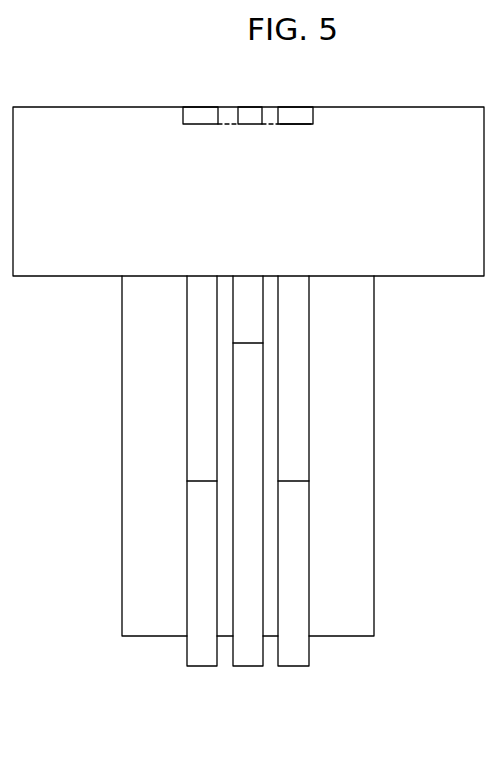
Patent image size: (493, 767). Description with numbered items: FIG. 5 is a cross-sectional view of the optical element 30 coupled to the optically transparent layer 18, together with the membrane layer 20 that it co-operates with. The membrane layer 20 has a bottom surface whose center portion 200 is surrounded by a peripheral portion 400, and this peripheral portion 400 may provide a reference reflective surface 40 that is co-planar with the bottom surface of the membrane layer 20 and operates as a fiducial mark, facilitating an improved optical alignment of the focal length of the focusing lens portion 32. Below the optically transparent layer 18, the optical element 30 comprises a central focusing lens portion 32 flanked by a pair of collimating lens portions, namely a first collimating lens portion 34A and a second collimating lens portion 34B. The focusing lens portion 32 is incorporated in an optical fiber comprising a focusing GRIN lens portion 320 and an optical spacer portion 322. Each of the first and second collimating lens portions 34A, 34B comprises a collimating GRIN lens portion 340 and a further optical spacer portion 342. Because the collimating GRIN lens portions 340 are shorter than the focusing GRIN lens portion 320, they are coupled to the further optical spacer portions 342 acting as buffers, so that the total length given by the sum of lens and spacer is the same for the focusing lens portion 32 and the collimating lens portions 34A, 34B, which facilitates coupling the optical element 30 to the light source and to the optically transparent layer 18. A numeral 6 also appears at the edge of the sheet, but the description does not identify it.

The optically transparent layer 18 is at (441, 276).
The peripheral portion 400 is at (198, 101).
The membrane layer 20 is at (254, 95).
The center portion 200 is at (251, 127).
The reference reflective surface 40 is at (289, 126).
The optical element 30 is at (148, 485).
The first collimating lens portion 34A is at (206, 669).
The focusing lens portion 32 is at (249, 669).
The second collimating lens portion 34B is at (294, 669).
The further optical spacer portion 342 is at (195, 422).
The collimating GRIN lens portion 340 is at (197, 545).
The optical spacer portion 322 is at (247, 300).
The focusing GRIN lens portion 320 is at (248, 393).
The partially shown element 6 is at (486, 440).